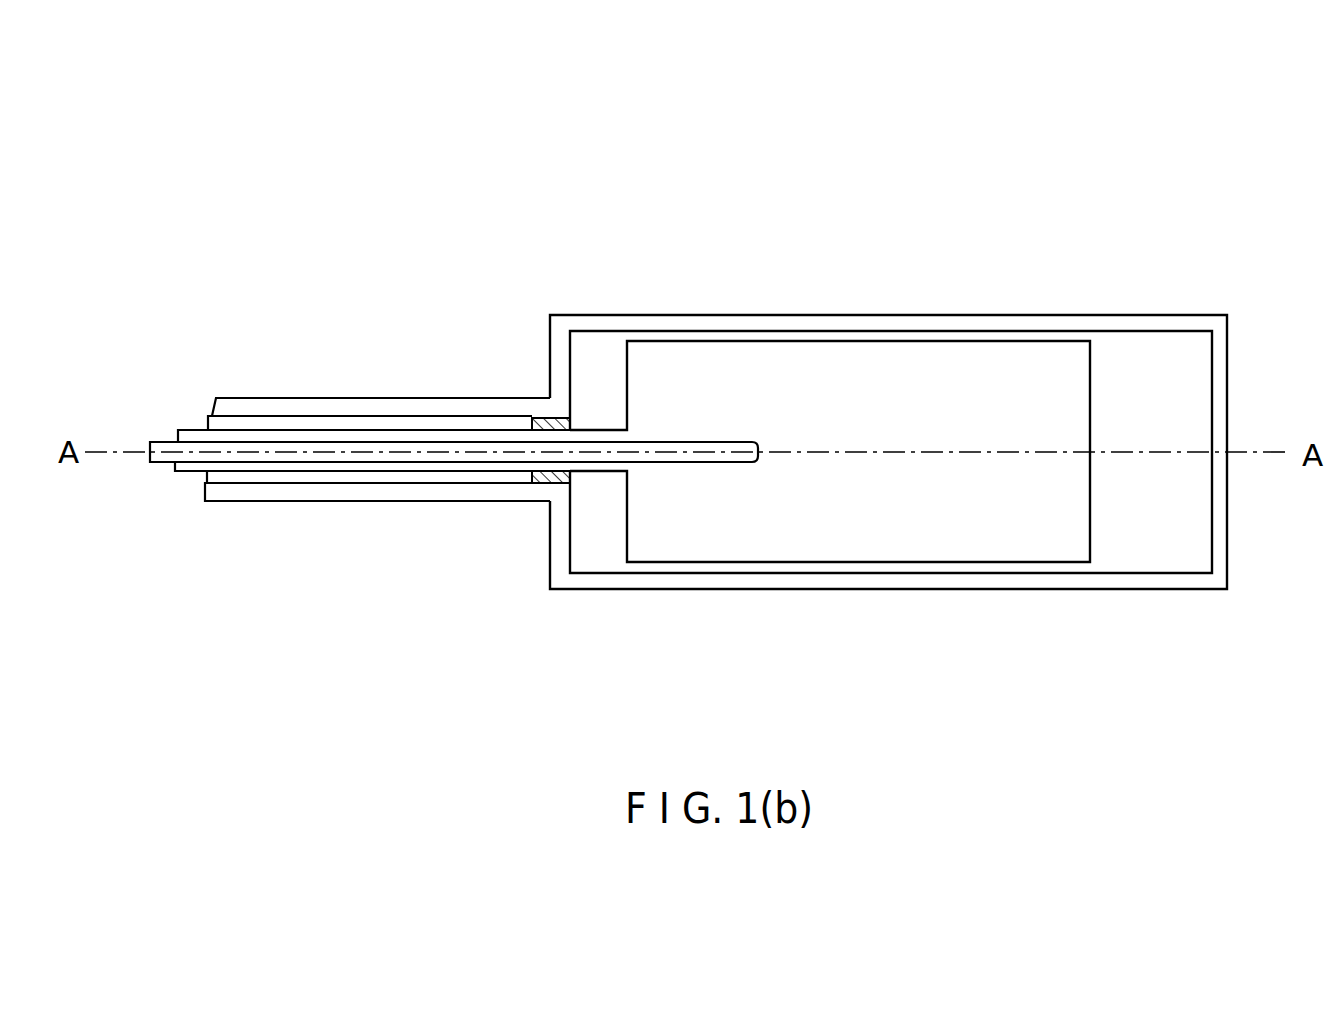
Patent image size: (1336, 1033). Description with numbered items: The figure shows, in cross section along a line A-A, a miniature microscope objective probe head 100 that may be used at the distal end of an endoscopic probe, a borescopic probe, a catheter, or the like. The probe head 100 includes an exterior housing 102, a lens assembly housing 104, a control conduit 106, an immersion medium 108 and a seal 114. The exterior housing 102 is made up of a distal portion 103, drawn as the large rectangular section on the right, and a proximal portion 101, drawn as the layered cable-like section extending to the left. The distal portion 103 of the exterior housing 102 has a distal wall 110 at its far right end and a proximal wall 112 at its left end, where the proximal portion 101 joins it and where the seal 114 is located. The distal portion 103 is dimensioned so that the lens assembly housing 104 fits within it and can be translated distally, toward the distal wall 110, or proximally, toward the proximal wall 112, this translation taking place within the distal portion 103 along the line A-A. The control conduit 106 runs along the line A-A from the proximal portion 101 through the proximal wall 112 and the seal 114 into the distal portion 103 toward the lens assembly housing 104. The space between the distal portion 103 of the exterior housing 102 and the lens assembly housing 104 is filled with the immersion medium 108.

The miniature microscope objective probe head 100 is at (315, 260).
The proximal portion 101 is at (262, 398).
The exterior housing 102 is at (712, 315).
The distal portion 103 is at (1015, 316).
The lens assembly housing 104 is at (893, 340).
The control conduit 106 is at (708, 462).
The immersion medium 108 is at (1128, 530).
The distal wall 110 is at (1222, 397).
The proximal wall 112 is at (548, 350).
The seal 114 is at (546, 417).